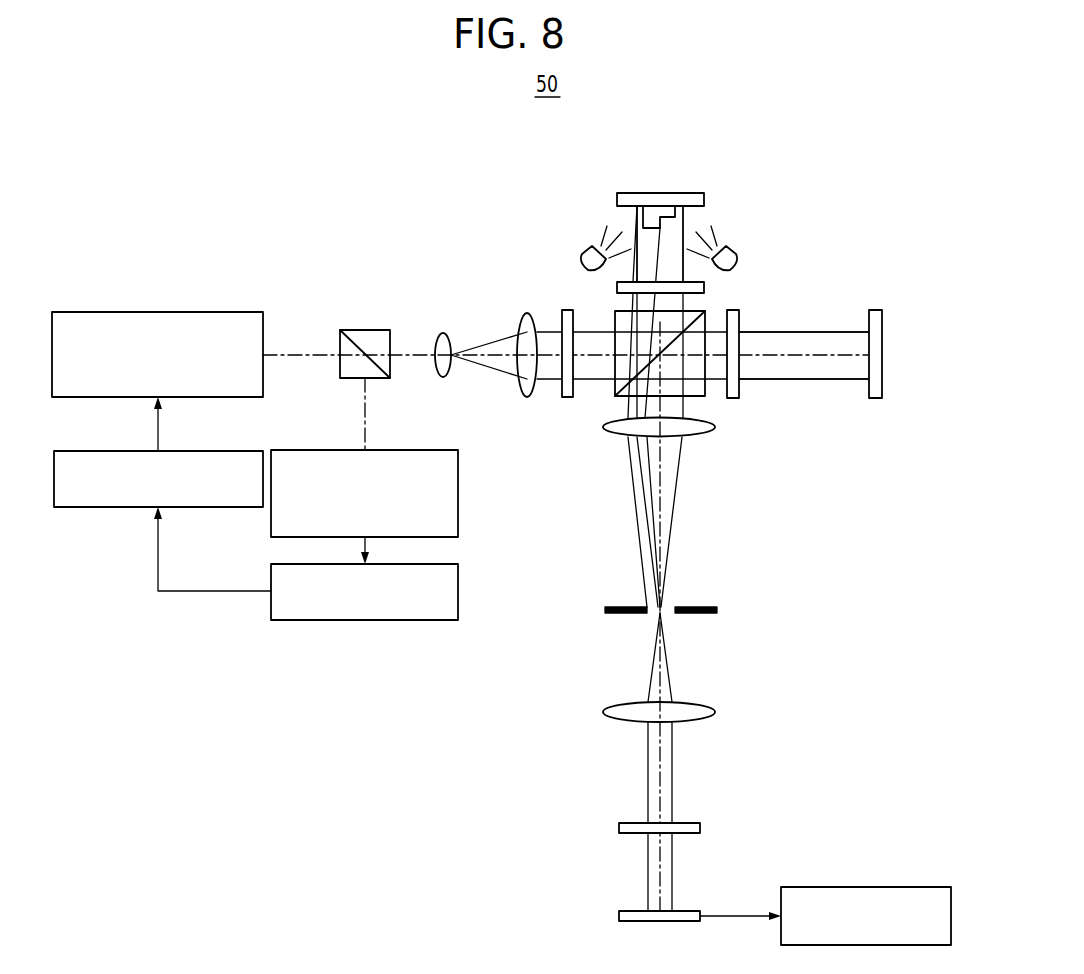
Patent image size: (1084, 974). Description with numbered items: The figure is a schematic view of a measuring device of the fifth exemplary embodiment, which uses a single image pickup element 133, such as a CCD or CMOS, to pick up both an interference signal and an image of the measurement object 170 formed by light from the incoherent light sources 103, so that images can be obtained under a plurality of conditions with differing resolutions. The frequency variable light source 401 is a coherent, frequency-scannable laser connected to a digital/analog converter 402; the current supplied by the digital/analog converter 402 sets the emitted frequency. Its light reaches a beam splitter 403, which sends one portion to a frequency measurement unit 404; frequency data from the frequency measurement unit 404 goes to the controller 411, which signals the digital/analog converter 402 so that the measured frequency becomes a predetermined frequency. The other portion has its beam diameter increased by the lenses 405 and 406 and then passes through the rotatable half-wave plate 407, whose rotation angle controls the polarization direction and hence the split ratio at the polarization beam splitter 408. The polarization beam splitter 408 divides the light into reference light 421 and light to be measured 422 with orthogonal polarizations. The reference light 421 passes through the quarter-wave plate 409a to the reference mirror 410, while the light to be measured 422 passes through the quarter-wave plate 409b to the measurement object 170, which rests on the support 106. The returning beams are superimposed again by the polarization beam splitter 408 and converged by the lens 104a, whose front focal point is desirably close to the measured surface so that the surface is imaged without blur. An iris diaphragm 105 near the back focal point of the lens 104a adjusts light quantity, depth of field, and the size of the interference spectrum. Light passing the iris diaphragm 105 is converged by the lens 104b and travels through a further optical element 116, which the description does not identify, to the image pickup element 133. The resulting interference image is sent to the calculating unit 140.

The frequency variable light source 401 is at (208, 312).
The digital/analog converter 402 is at (125, 507).
The beam splitter 403 is at (372, 334).
The frequency measurement unit 404 is at (460, 492).
The lens 405 is at (442, 336).
The lens 406 is at (527, 318).
The λ/2 waveplate 407 is at (568, 310).
The polarization beam splitter 408 is at (700, 385).
The λ/4 waveplate 409a is at (735, 385).
The λ/4 waveplate 409b is at (704, 290).
The reference mirror 410 is at (875, 313).
The controller 411 is at (460, 592).
The reference light 421 is at (810, 338).
The light to be measured 422 is at (683, 225).
The support 106 is at (658, 193).
The measurement object 170 is at (650, 218).
The incoherent light sources 103 is at (585, 255).
The lens 104a is at (610, 432).
The lens 104b is at (612, 702).
The iris diaphragm 105 is at (628, 607).
The filter 116 is at (620, 828).
The image pickup element 133 is at (620, 916).
The calculating unit 140 is at (908, 887).